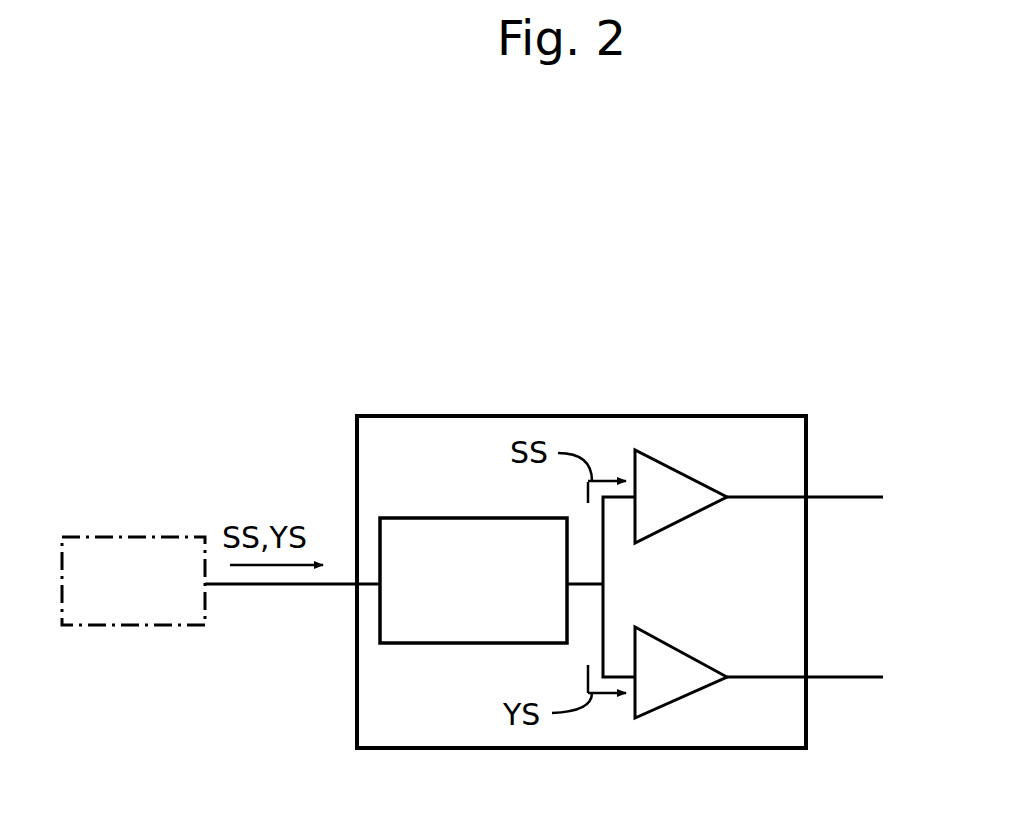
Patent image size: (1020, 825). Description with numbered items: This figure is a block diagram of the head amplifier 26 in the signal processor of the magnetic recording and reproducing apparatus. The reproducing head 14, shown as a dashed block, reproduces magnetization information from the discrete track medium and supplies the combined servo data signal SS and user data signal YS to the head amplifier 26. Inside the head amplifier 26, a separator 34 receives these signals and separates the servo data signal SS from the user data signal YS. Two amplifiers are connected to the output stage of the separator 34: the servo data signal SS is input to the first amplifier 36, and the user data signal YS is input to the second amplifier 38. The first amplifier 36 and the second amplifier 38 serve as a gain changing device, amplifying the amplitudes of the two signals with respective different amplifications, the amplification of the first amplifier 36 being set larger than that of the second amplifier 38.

The reproducing head 14 is at (102, 543).
The head amplifier 26 is at (640, 296).
The separator 34 is at (412, 630).
The first amplifier 36 is at (676, 465).
The second amplifier 38 is at (690, 693).